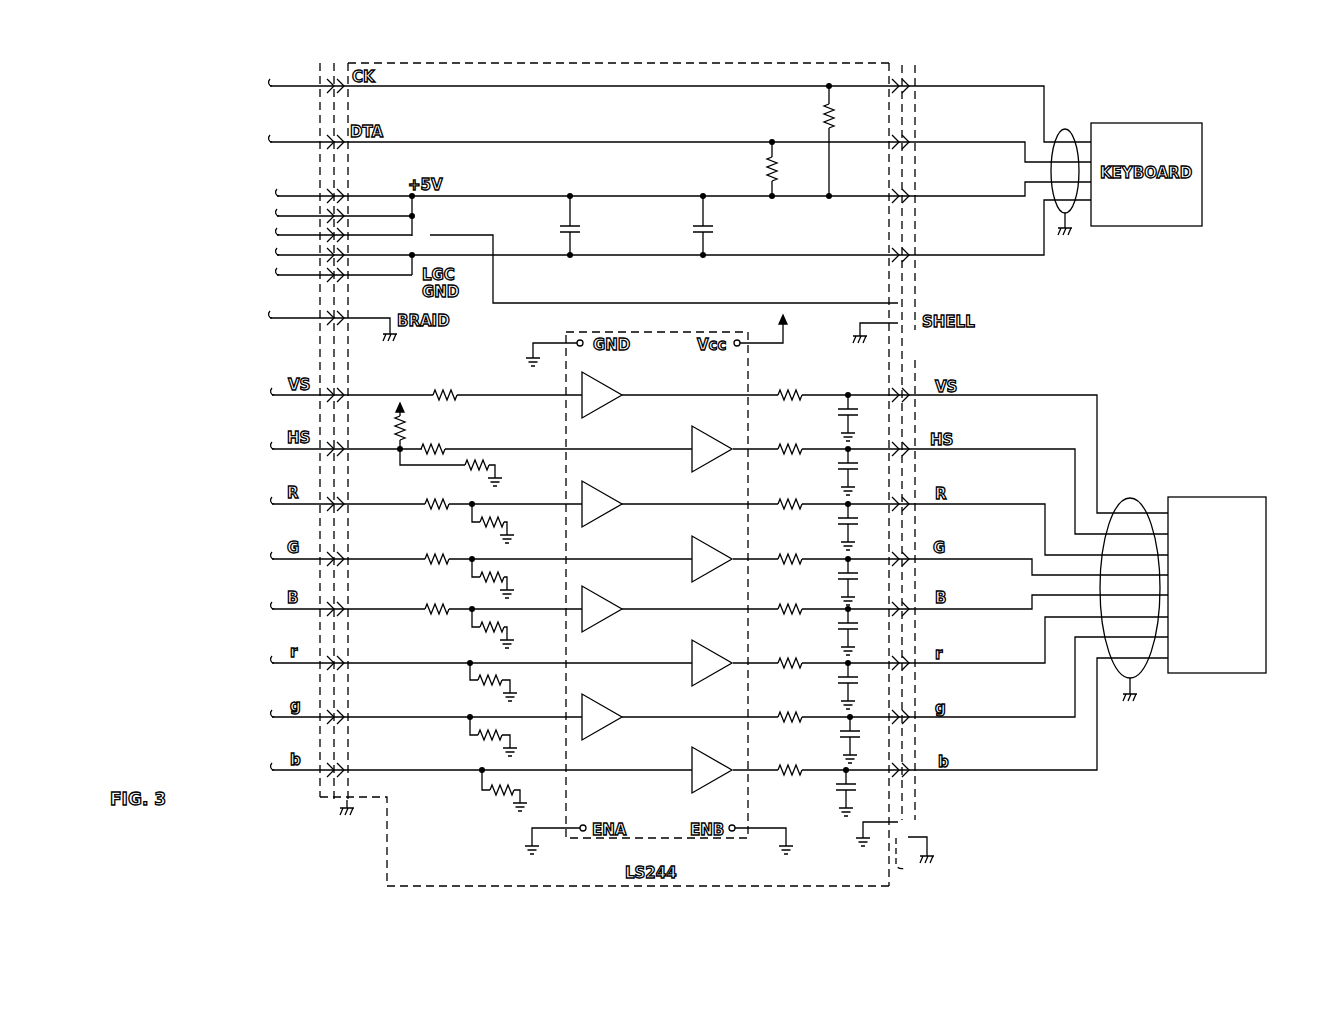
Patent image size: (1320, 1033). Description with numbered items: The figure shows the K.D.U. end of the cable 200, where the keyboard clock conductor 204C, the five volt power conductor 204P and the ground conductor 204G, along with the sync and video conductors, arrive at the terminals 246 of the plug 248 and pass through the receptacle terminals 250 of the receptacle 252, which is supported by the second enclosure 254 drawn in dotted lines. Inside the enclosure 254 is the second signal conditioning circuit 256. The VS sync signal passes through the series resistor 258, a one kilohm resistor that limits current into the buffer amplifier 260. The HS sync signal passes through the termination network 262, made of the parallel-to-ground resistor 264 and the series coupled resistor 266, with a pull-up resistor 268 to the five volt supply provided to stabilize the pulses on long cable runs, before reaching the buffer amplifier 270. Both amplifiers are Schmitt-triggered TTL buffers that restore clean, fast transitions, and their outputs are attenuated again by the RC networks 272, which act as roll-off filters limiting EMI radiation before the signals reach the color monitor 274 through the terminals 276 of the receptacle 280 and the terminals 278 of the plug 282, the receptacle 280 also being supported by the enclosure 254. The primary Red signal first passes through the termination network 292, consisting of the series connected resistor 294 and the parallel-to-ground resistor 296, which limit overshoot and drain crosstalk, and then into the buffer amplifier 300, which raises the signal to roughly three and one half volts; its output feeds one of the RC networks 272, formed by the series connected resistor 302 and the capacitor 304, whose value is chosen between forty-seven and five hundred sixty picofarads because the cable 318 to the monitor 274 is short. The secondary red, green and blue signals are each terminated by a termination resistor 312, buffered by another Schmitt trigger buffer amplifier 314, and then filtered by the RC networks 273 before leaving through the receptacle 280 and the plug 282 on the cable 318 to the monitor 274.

The cable 200 is at (250, 120).
The keyboard clock conductor 204C is at (312, 88).
The +5 volt power conductor 204P is at (275, 237).
The ground conductor 204G is at (275, 276).
The terminals of plug 246 is at (330, 190).
The plug 248 is at (318, 798).
The receptacle terminals 250 is at (348, 145).
The receptacle 252 is at (332, 818).
The second enclosure 254 is at (478, 64).
The second signal conditioning circuit 256 is at (470, 350).
The series resistor 258 is at (445, 390).
The buffer amplifier 260 is at (612, 402).
The termination network 262 is at (450, 446).
The parallel-to-ground resistor 264 is at (470, 470).
The series coupled resistor 266 is at (446, 449).
The pull-up resistor 268 is at (403, 428).
The buffer amplifier 270 is at (716, 470).
The RC networks 272 is at (818, 530).
The RC networks 273 is at (828, 648).
The color monitor 274 is at (1238, 525).
The terminals of receptacle 276 is at (893, 392).
The terminals of plug 278 is at (908, 392).
The receptacle 280 is at (929, 860).
The plug 282 is at (920, 832).
The termination network 292 is at (459, 511).
The series connected resistor 294 is at (430, 502).
The parallel-to-ground resistor 296 is at (502, 524).
The buffer amplifier 300 is at (608, 522).
The series connected resistor 302 is at (778, 500).
The capacitor 304 is at (845, 522).
The termination resistor 312 is at (494, 730).
The Schmitt trigger buffer amplifier 314 is at (715, 655).
The cable 318 is at (1131, 494).